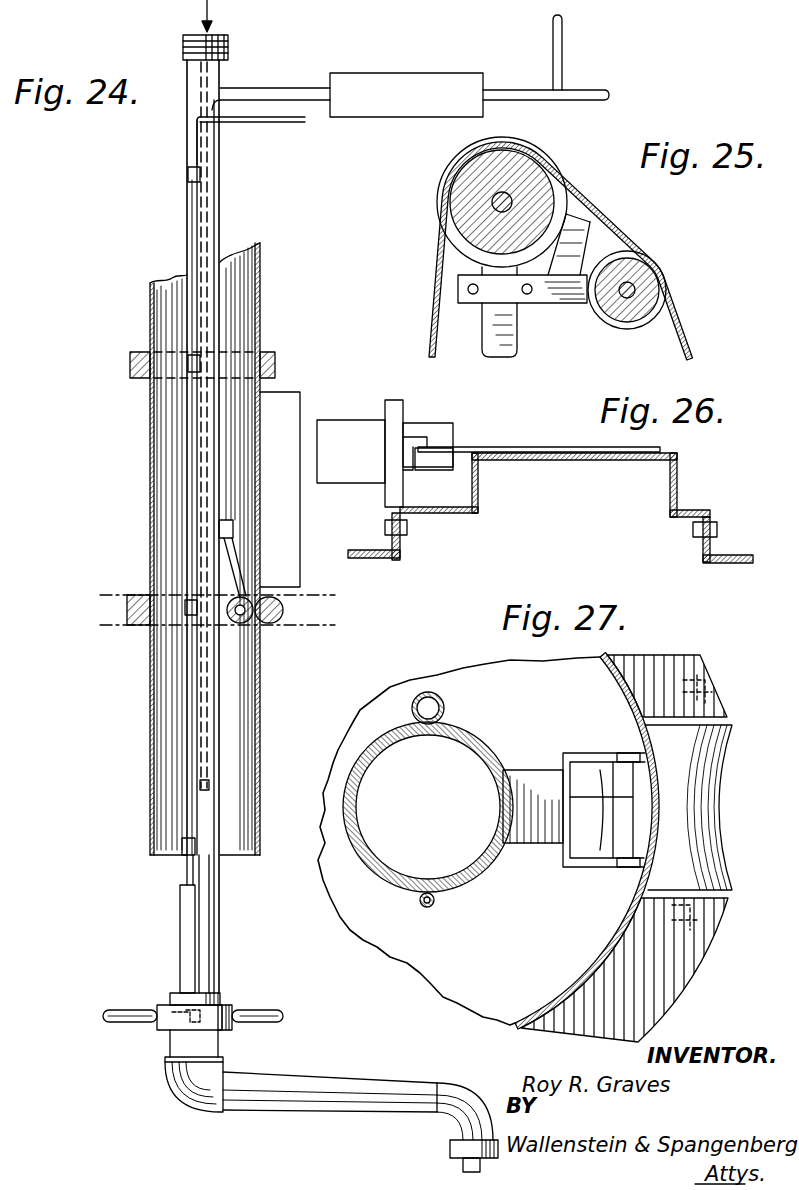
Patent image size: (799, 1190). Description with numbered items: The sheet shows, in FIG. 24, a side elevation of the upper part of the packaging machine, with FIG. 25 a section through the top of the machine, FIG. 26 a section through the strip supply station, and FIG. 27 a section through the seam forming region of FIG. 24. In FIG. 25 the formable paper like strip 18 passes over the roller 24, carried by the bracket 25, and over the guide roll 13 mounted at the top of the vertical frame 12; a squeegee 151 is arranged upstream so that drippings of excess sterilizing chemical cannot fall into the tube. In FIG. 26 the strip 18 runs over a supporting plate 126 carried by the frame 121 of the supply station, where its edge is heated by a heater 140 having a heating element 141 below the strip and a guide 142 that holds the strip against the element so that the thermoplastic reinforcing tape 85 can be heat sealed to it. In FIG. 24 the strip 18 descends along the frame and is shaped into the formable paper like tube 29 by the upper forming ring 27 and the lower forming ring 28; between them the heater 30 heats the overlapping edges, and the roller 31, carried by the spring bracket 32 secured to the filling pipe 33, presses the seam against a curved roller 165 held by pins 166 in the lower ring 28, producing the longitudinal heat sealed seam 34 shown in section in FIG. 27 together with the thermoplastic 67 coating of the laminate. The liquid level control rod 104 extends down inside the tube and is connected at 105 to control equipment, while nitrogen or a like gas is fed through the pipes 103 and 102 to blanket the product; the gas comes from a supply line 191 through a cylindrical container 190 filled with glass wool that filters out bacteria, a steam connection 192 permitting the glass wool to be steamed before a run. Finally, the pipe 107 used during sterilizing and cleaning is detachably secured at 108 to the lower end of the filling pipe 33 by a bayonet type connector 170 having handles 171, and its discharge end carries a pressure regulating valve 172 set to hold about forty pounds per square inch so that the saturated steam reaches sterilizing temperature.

In FIG. 25, the vertical frame 12 is at (513, 340).
In FIG. 25, the guide roll 13 is at (462, 206).
In FIG. 24, the formable paper like strip 18 is at (150, 304).
In FIG. 25, the formable paper like strip 18 is at (686, 326).
In FIG. 26, the formable paper like strip 18 is at (505, 448).
In FIG. 25, the roller 24 is at (645, 284).
In FIG. 25, the bracket 25 is at (576, 298).
In FIG. 24, the upper forming ring 27 is at (130, 365).
In FIG. 24, the lower forming ring 28 is at (127, 618).
In FIG. 24, the formable paper like tube 29 is at (150, 682).
In FIG. 24, the heater 30 is at (285, 400).
In FIG. 24, the roller 31 is at (241, 623).
In FIG. 24, the spring arm 32 is at (233, 568).
In FIG. 27, the spring arm 32 is at (537, 845).
In FIG. 24, the filling pipe 33 is at (187, 256).
In FIG. 27, the filling pipe 33 is at (480, 746).
In FIG. 27, the longitudinal heat sealed seam 34 is at (662, 790).
In FIG. 27, the thermoplastic 67 is at (566, 805).
In FIG. 27, the thermoplastic reinforcing tape 85 is at (630, 762).
In FIG. 24, the feed line 102 is at (204, 722).
In FIG. 27, the feed line 102 is at (445, 708).
In FIG. 24, the pipe 103 is at (272, 98).
In FIG. 24, the liquid level control rod 104 is at (186, 810).
In FIG. 27, the liquid level control rod 104 is at (434, 904).
In FIG. 24, the gas feed line 105 is at (268, 128).
In FIG. 24, the pipe 107 is at (334, 1088).
In FIG. 24, the detachable connection 108 is at (172, 1036).
In FIG. 26, the frame 121 is at (375, 558).
In FIG. 26, the supporting plate 126 is at (542, 460).
In FIG. 26, the heater 140 is at (348, 424).
In FIG. 26, the heating element 141 is at (446, 462).
In FIG. 26, the guide 142 is at (438, 430).
In FIG. 25, the squeegee 151 is at (583, 216).
In FIG. 24, the curved roller 165 is at (283, 612).
In FIG. 27, the curved roller 165 is at (690, 808).
In FIG. 27, the pins 166 is at (740, 690).
In FIG. 24, the bayonet type connector 170 is at (176, 1010).
In FIG. 24, the handles 171 is at (270, 1012).
In FIG. 24, the pressure regulating valve 172 is at (450, 1147).
In FIG. 24, the cylindrical container 190 is at (400, 73).
In FIG. 24, the supply line 191 is at (595, 90).
In FIG. 24, the steam connection 192 is at (564, 46).